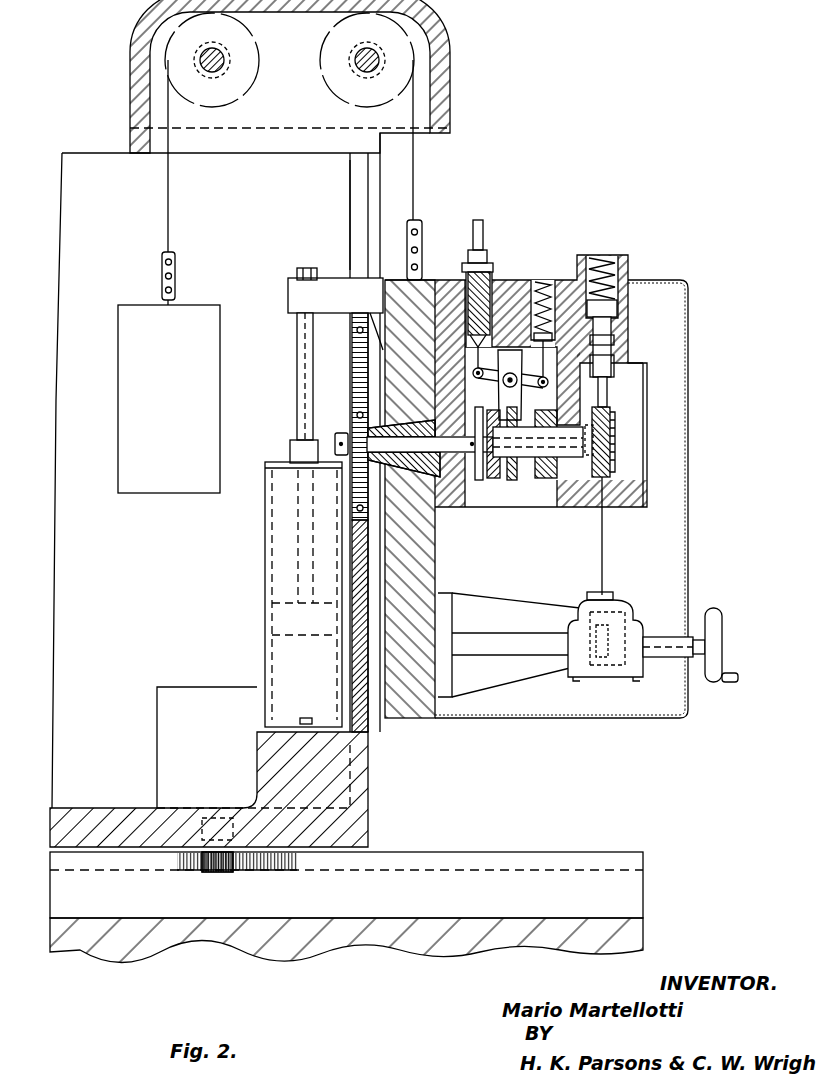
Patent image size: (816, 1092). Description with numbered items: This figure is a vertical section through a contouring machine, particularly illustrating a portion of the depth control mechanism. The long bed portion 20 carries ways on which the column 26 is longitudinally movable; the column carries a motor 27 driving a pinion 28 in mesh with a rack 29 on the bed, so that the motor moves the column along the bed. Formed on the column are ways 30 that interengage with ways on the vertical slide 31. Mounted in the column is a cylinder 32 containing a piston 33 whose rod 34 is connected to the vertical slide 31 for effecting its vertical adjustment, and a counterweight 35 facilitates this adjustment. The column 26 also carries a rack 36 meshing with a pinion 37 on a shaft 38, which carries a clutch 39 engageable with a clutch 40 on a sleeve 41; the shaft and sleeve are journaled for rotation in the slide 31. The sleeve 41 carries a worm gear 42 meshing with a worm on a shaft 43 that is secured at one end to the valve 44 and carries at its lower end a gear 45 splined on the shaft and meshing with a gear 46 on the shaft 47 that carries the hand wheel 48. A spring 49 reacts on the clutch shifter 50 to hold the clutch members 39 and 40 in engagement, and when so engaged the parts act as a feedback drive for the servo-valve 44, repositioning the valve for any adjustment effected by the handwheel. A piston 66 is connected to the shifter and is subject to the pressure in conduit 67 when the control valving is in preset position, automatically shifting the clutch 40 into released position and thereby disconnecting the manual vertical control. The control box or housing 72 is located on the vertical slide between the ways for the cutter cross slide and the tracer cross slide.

The bed portion 20 is at (640, 909).
The column 26 is at (76, 245).
The motor 27 is at (173, 690).
The pinion 28 is at (212, 873).
The rack 29 is at (288, 873).
The ways 30 is at (362, 198).
The vertical slide 31 is at (433, 278).
The cylinder 32 is at (267, 625).
The piston 33 is at (285, 637).
The rod 34 is at (303, 396).
The counterweight 35 is at (205, 318).
The rack 36 is at (352, 370).
The pinion 37 is at (350, 432).
The shaft 38 is at (457, 482).
The clutch 39 is at (482, 482).
The clutch 40 is at (515, 482).
The sleeve 41 is at (523, 482).
The worm gear 42 is at (585, 415).
The shaft 43 is at (605, 395).
The valve 44 is at (607, 308).
The gear 45 is at (592, 637).
The gear 46 is at (613, 657).
The shaft 47 is at (668, 645).
The hand wheel 48 is at (713, 685).
The spring 49 is at (562, 352).
The clutch shifter 50 is at (523, 387).
The piston 66 is at (483, 320).
The conduit 67 is at (485, 230).
The control box or housing 72 is at (690, 540).